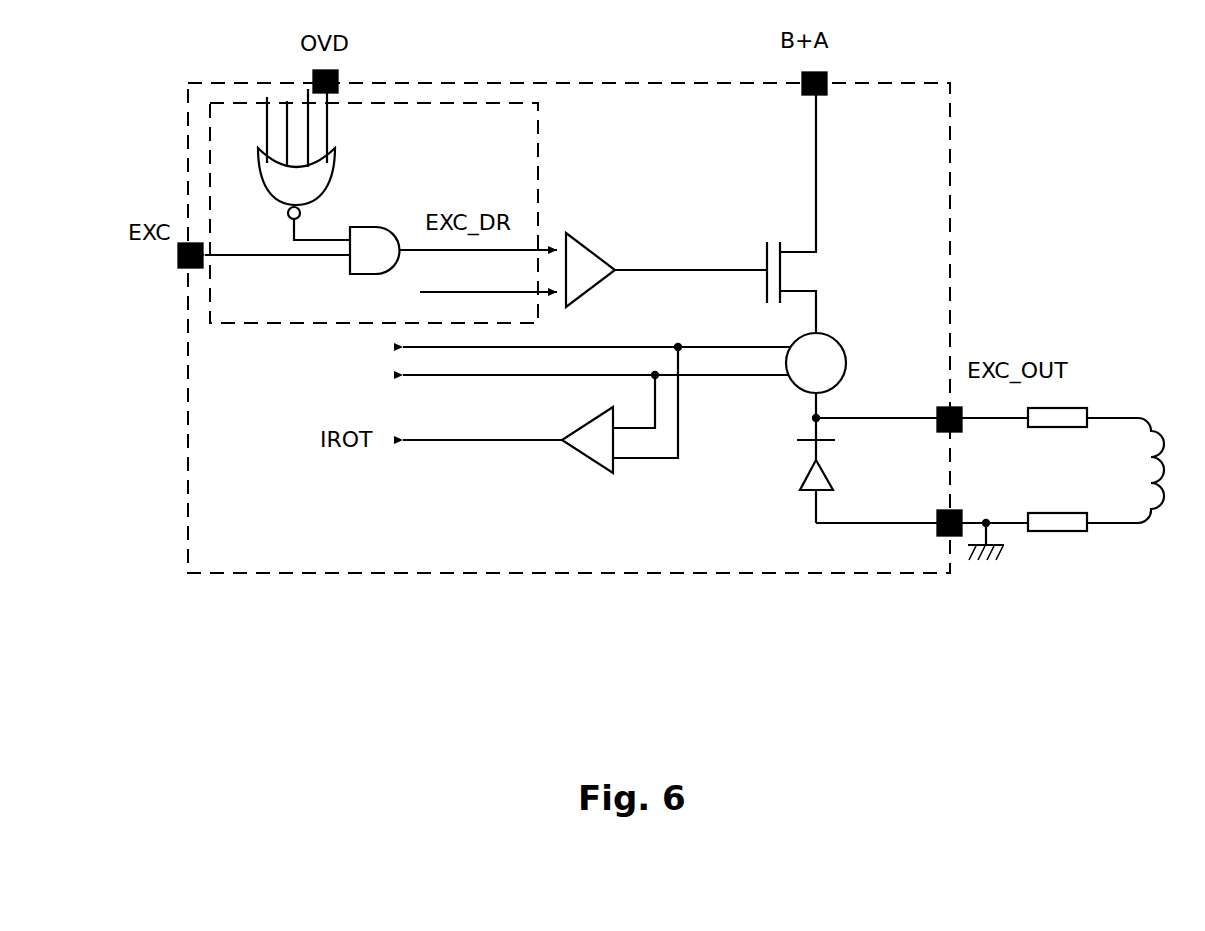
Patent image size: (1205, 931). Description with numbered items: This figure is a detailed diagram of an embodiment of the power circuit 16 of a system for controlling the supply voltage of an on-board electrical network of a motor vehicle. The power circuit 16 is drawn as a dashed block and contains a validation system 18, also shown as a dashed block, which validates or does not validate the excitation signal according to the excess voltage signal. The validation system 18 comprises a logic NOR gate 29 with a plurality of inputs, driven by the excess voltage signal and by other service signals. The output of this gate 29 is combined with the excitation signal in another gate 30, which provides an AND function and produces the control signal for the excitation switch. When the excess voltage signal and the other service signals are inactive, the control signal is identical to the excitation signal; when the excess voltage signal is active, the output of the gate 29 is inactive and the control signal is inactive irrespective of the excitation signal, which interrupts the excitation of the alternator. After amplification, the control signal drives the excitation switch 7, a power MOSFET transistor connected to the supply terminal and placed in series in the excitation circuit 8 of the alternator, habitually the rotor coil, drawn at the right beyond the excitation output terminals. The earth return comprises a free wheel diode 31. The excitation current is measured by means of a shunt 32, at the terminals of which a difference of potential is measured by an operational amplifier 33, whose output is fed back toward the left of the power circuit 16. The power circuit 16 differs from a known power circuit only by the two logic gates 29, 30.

The excitation switch 7 is at (763, 252).
The excitation circuit 8 is at (1156, 513).
The power circuit 16 is at (410, 578).
The validation system 18 is at (543, 152).
The logic NOR gate 29 is at (337, 178).
The AND gate 30 is at (367, 276).
The free wheel diode 31 is at (803, 472).
The shunt 32 is at (842, 355).
The operational amplifier 33 is at (578, 448).